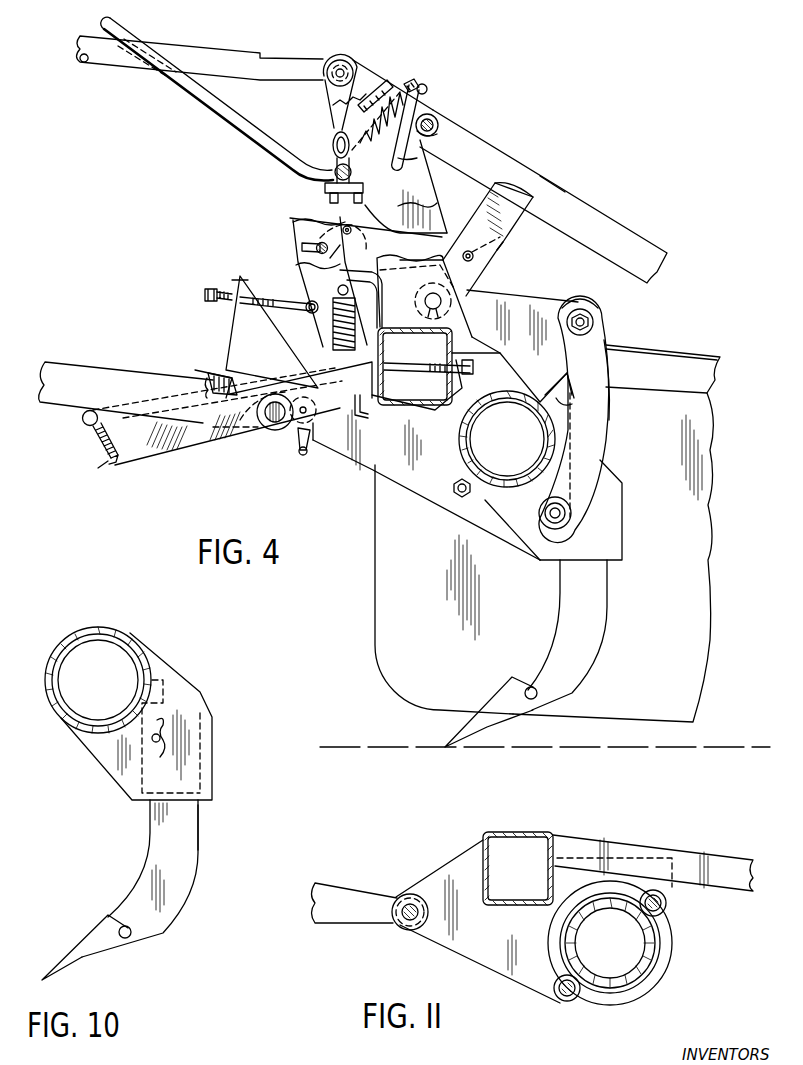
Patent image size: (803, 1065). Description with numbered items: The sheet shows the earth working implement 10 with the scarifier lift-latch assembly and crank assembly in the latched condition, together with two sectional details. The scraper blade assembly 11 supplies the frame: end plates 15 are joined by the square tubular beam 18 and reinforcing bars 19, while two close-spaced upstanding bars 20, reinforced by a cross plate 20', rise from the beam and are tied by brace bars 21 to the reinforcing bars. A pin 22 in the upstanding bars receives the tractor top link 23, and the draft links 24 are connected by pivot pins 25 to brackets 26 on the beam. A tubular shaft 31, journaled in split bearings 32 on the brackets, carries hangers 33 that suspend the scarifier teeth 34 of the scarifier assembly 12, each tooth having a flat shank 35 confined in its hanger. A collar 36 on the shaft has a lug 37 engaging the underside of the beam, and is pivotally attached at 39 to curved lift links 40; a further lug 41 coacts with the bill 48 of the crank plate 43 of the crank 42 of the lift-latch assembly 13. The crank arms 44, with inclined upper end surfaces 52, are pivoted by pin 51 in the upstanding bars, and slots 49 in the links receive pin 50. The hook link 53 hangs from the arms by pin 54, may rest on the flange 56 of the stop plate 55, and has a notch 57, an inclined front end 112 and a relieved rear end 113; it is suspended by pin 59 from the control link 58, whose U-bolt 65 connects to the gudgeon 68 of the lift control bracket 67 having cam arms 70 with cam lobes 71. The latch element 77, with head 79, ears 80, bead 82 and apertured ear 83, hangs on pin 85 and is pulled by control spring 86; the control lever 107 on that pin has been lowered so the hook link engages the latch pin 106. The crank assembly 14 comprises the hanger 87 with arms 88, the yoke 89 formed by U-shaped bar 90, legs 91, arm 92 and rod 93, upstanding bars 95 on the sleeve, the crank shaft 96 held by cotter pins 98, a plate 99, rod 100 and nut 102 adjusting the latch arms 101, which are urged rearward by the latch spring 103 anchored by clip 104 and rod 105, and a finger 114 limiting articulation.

In FIG. 4, the earth working implement 10 is at (362, 561).
In FIG. 4, the scraper blade assembly 11 is at (739, 527).
In FIG. 4, the scarifier assembly 12 is at (637, 626).
In FIG. 10, the scarifier assembly 12 is at (132, 838).
In FIG. 4, the scarifier lift-latch assembly 13 is at (636, 441).
In FIG. 4, the crank or lift shaft assembly 14 is at (92, 467).
In FIG. 4, the end plate 15 is at (375, 642).
In FIG. 4, the beam 18 is at (420, 400).
In FIG. 11, the beam 18 is at (534, 833).
In FIG. 4, the reinforcing bar 19 is at (700, 342).
In FIG. 11, the reinforcing bar 19 is at (708, 890).
In FIG. 4, the upstanding bar 20 is at (331, 92).
In FIG. 4, the cross plate 20' is at (393, 80).
In FIG. 4, the brace bar 21 is at (613, 227).
In FIG. 4, the pin 22 is at (338, 60).
In FIG. 4, the top link 23 is at (138, 70).
In FIG. 4, the draft link 24 is at (69, 354).
In FIG. 11, the draft link 24 is at (352, 883).
In FIG. 11, the pivot pin 25 is at (398, 932).
In FIG. 4, the bracket 26 is at (340, 455).
In FIG. 11, the bracket 26 is at (508, 976).
In FIG. 4, the shaft 31 is at (470, 425).
In FIG. 10, the shaft 31 is at (132, 658).
In FIG. 11, the shaft 31 is at (642, 955).
In FIG. 4, the split bearing 32 is at (472, 503).
In FIG. 11, the split bearing 32 is at (663, 980).
In FIG. 4, the hanger 33 is at (622, 520).
In FIG. 10, the hanger 33 is at (88, 747).
In FIG. 10, the scarifier tooth 34 is at (80, 942).
In FIG. 10, the shank 35 is at (200, 838).
In FIG. 4, the collar 36 is at (508, 394).
In FIG. 4, the lug 37 is at (440, 412).
In FIG. 4, the pivotal attachment 39 is at (567, 521).
In FIG. 4, the lift link 40 is at (608, 380).
In FIG. 4, the lug 41 is at (565, 405).
In FIG. 4, the crank 42 is at (589, 190).
In FIG. 4, the crank plate 43 is at (527, 300).
In FIG. 4, the crank arm 44 is at (512, 232).
In FIG. 4, the bill 48 is at (568, 378).
In FIG. 4, the slot 49 is at (582, 300).
In FIG. 4, the pivot pin 50 is at (600, 320).
In FIG. 4, the pivot pin 51 is at (445, 302).
In FIG. 4, the upper end surface 52 is at (513, 184).
In FIG. 4, the hook link 53 is at (293, 218).
In FIG. 4, the pivot pin 54 is at (470, 250).
In FIG. 4, the stop plate 55 is at (388, 308).
In FIG. 4, the flange 56 is at (358, 282).
In FIG. 4, the notch 57 is at (342, 252).
In FIG. 4, the control link 58 is at (325, 190).
In FIG. 4, the pivot pin 59 is at (350, 230).
In FIG. 4, the U-bolt 65 is at (338, 133).
In FIG. 4, the lift control bracket 67 is at (459, 217).
In FIG. 4, the gudgeon 68 is at (335, 163).
In FIG. 4, the cam arm 70 is at (397, 157).
In FIG. 4, the cam lobe 71 is at (397, 166).
In FIG. 4, the latch element 77 is at (452, 184).
In FIG. 4, the latch head 79 is at (428, 91).
In FIG. 4, the ear 80 is at (438, 136).
In FIG. 4, the bead 82 is at (373, 136).
In FIG. 4, the ear 83 is at (412, 86).
In FIG. 4, the pivot pin 85 is at (440, 124).
In FIG. 4, the control spring 86 is at (384, 86).
In FIG. 4, the hanger 87 is at (388, 360).
In FIG. 4, the hanger arm 88 is at (300, 380).
In FIG. 4, the yoke 89 is at (68, 425).
In FIG. 4, the U-shaped bar 90 is at (122, 501).
In FIG. 4, the yoke leg 91 is at (100, 440).
In FIG. 4, the yoke arm 92 is at (143, 458).
In FIG. 4, the rod 93 is at (198, 370).
In FIG. 4, the upstanding bar 95 is at (235, 335).
In FIG. 4, the crank shaft 96 is at (250, 432).
In FIG. 4, the cotter pin 98 is at (276, 395).
In FIG. 4, the apertured plate 99 is at (238, 278).
In FIG. 4, the rod 100 is at (205, 292).
In FIG. 4, the latch arm 101 is at (297, 268).
In FIG. 4, the nut 102 is at (210, 298).
In FIG. 4, the latch spring 103 is at (330, 328).
In FIG. 4, the clip 104 is at (362, 412).
In FIG. 4, the rod 105 is at (338, 287).
In FIG. 4, the latch pin 106 is at (302, 247).
In FIG. 4, the control lever 107 is at (122, 28).
In FIG. 4, the inclined front end 112 is at (292, 228).
In FIG. 4, the relieved rear end portion 113 is at (498, 264).
In FIG. 4, the finger 114 is at (303, 452).